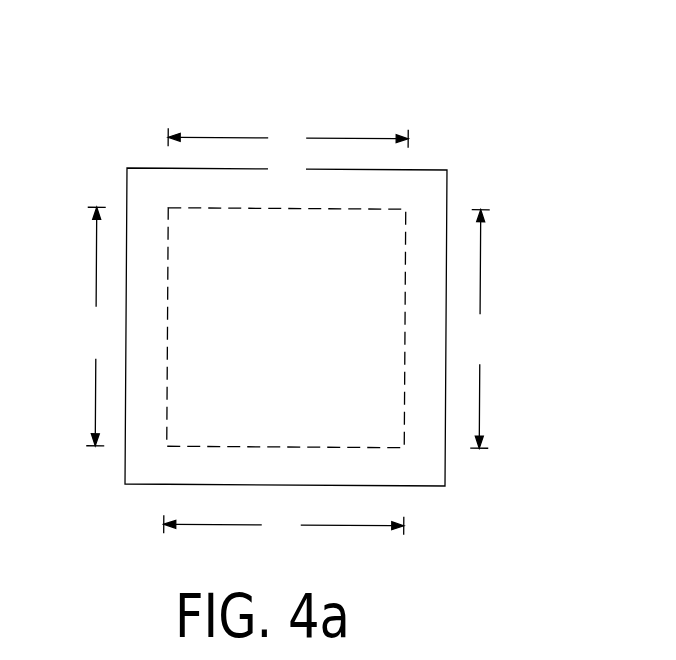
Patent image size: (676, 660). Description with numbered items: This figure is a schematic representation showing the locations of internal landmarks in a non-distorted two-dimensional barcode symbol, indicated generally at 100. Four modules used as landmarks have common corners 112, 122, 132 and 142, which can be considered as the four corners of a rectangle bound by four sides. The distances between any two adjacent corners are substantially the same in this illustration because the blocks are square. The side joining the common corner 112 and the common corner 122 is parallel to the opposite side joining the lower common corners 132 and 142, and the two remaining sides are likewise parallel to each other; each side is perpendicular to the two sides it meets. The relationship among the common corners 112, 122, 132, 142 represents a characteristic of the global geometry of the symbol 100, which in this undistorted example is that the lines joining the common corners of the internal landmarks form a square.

The frame / die outline 100 is at (312, 87).
The common corner 112 is at (167, 192).
The common corner 122 is at (406, 200).
The common corner 132 is at (403, 458).
The common corner 142 is at (167, 448).